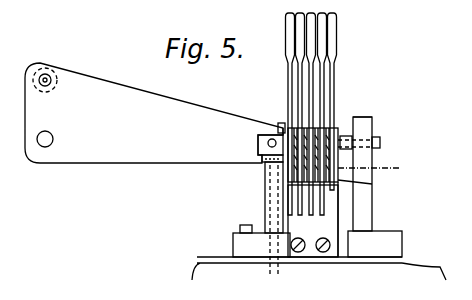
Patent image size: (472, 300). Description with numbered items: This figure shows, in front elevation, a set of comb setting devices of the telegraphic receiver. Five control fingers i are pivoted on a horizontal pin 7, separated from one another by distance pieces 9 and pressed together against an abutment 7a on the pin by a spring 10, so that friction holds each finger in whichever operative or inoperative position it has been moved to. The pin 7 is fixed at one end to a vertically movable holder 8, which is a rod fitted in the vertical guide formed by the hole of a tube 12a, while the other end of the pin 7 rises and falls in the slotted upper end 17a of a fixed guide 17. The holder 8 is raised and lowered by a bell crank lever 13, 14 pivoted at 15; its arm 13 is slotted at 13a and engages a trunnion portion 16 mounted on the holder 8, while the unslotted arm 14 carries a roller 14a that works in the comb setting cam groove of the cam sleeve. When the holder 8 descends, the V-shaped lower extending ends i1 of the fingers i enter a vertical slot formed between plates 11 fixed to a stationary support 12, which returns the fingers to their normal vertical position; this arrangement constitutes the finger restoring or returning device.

The bell crank lever arm 13 is at (154, 113).
The unslotted arm of bell crank lever 14 is at (45, 91).
The roller 14a is at (52, 62).
The pivot 15 is at (53, 138).
The abutment 7a is at (279, 124).
The slot 13a is at (250, 133).
The trunnion portion 16 is at (258, 149).
The control fingers i is at (326, 79).
The spring 10 is at (341, 126).
The fixed guide 17 is at (360, 213).
The slotted upper end 17a is at (372, 119).
The horizontal pin 7 is at (380, 144).
The lower extending ends of fingers i1 is at (377, 164).
The distance pieces 9 is at (372, 186).
The tube 12a is at (265, 205).
The holder 8 is at (265, 240).
The plates 11 is at (336, 230).
The stationary support 12 is at (400, 247).